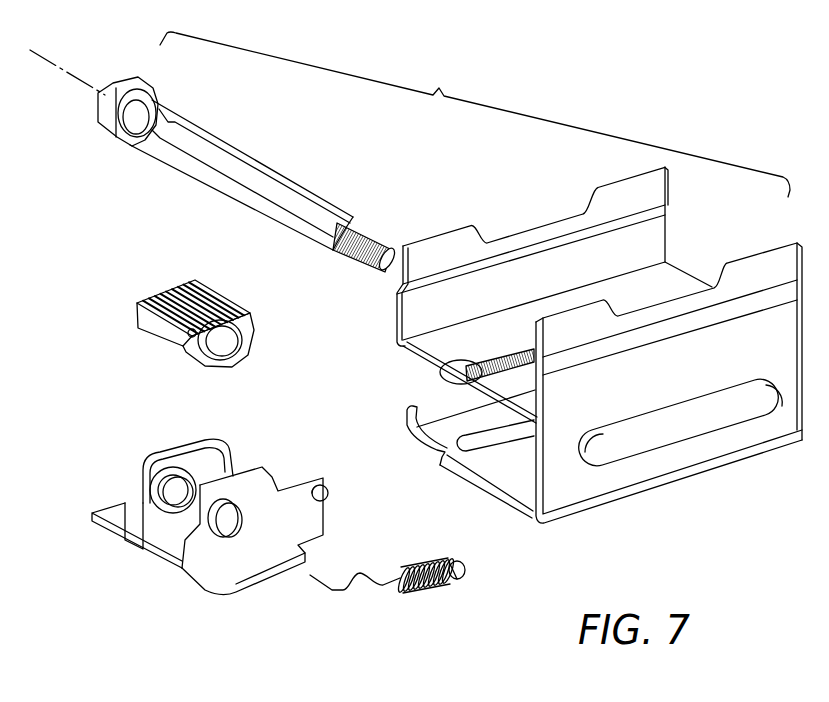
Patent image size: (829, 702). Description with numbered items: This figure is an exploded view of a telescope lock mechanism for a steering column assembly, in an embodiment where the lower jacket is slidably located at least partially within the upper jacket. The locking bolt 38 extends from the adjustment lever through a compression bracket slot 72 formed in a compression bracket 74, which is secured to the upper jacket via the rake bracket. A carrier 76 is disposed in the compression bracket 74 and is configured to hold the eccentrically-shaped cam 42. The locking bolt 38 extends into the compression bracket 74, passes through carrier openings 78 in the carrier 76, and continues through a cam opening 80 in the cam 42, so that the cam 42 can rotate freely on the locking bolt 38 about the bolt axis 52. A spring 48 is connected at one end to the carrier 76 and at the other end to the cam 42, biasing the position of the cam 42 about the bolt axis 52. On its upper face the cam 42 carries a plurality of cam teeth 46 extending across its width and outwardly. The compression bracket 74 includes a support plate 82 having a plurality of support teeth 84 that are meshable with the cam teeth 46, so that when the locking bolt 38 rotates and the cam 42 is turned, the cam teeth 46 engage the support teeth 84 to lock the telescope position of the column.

The locking bolt 38 is at (124, 90).
The bolt axis 52 is at (80, 87).
The cam teeth 46 is at (167, 288).
The cam 42 is at (178, 343).
The cam opening 80 is at (232, 356).
The support plate 82 is at (467, 338).
The support teeth 84 is at (468, 366).
The compression bracket slot 72 is at (683, 420).
The compression bracket 74 is at (580, 490).
The carrier 76 is at (225, 571).
The carrier openings 78 is at (157, 497).
The spring 48 is at (435, 593).